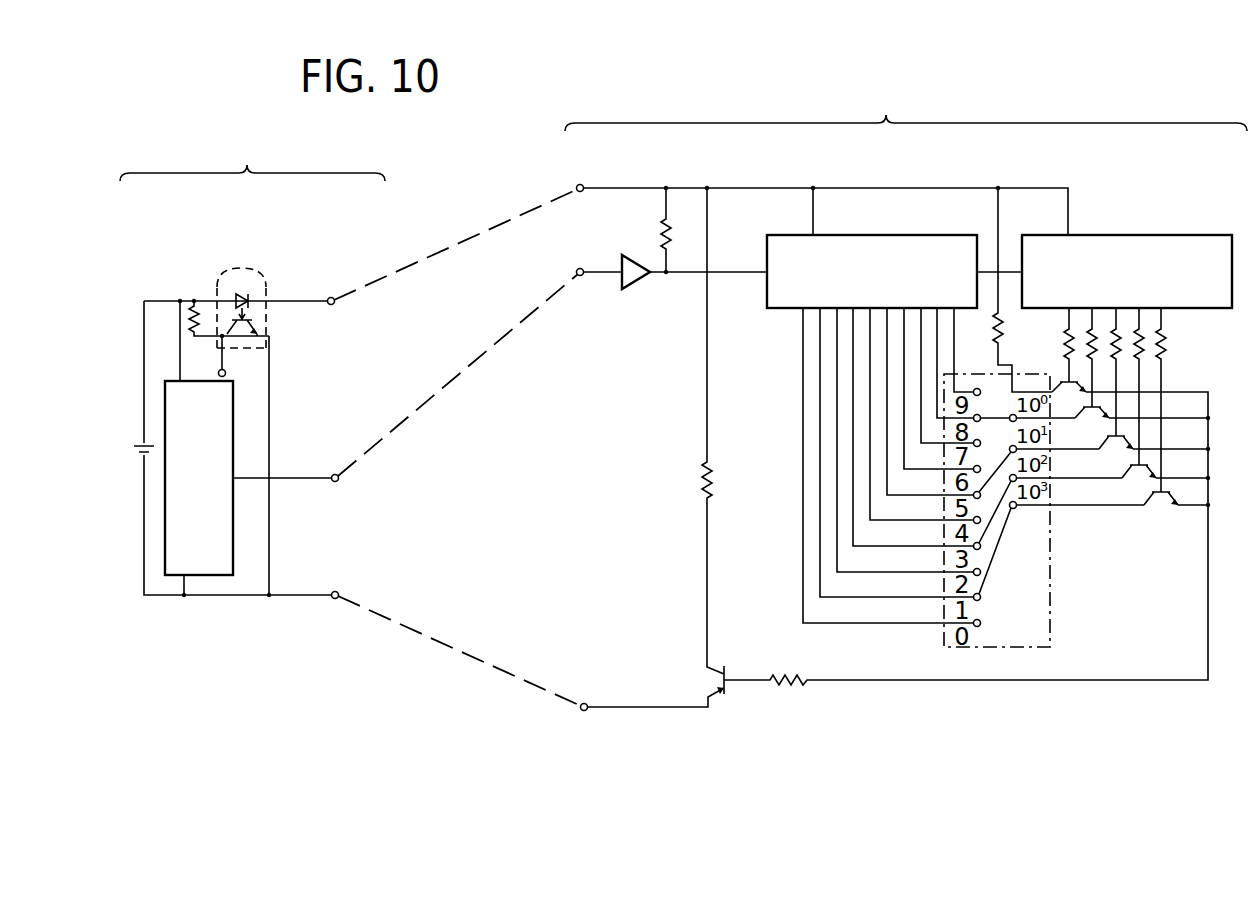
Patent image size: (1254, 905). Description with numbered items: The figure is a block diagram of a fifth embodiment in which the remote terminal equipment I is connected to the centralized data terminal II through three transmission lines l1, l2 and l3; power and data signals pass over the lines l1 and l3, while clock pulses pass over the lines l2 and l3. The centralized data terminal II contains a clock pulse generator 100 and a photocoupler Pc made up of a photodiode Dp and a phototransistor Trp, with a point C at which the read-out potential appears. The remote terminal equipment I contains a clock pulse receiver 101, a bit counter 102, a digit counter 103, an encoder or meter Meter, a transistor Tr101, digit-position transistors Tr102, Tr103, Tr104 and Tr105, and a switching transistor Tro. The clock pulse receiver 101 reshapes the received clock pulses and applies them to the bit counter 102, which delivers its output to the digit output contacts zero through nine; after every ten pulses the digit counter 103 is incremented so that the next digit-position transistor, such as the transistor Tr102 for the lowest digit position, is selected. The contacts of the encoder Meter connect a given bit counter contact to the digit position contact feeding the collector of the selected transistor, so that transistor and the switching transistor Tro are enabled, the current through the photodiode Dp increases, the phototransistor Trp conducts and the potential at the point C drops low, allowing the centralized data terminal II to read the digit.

The clock pulse generator 100 is at (210, 575).
The clock pulse receiver 101 is at (633, 284).
The bit counter 102 is at (778, 308).
The digit counter 103 is at (1183, 235).
The transistor Tr101 is at (1058, 388).
The transistor Tr102 is at (1092, 420).
The transistor Tr103 is at (1116, 452).
The transistor Tr104 is at (1139, 481).
The transistor Tr105 is at (1161, 508).
The switching transistor Tro is at (735, 688).
The photocoupler Pc is at (236, 285).
The photodiode Dp is at (252, 290).
The phototransistor Trp is at (258, 330).
The point C is at (214, 355).
The transmission line l1 is at (456, 244).
The transmission line l2 is at (458, 375).
The transmission line l3 is at (459, 651).
The encoder or meter Meter is at (1046, 615).
The remote terminal equipment I is at (906, 102).
The centralized data terminal II is at (273, 150).